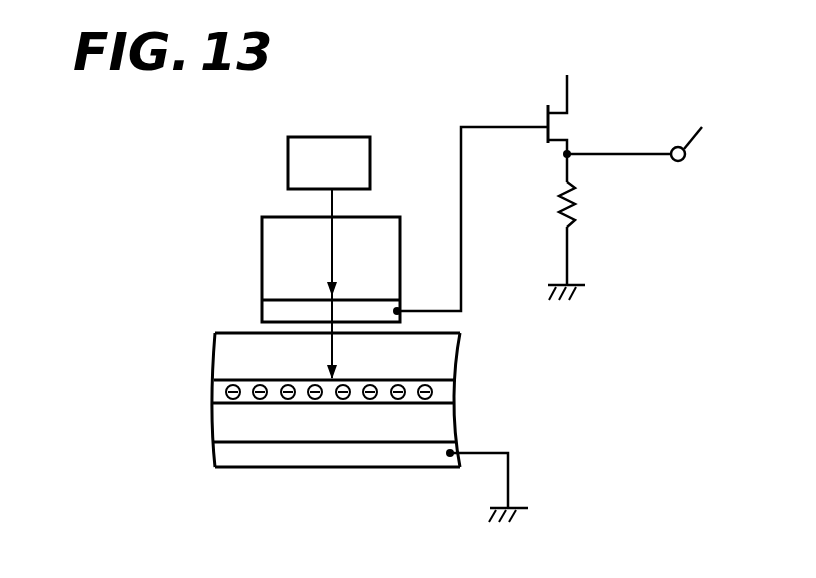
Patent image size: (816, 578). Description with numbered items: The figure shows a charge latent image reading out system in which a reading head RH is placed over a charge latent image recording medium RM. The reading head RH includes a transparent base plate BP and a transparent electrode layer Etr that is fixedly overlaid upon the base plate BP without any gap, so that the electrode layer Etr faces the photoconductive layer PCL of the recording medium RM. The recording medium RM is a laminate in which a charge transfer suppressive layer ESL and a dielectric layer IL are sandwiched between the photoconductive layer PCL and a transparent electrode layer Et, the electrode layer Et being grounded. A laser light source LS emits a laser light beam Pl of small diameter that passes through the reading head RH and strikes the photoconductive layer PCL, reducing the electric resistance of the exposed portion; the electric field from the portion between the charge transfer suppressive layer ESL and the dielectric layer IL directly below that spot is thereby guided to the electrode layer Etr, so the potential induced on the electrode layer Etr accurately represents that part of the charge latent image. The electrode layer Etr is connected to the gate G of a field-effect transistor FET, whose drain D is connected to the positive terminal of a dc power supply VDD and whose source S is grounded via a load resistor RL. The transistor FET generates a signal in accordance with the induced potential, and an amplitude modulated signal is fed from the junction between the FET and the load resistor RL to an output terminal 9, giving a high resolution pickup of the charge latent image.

The laser light source LS is at (329, 163).
The laser light beam Pl is at (340, 203).
The reading head RH is at (277, 203).
The transparent base plate BP is at (270, 243).
The transparent electrode layer Etr is at (275, 303).
The charge latent image recording medium RM is at (330, 419).
The photoconductive layer PCL is at (442, 354).
The charge transfer suppressive layer ESL is at (455, 392).
The dielectric layer IL is at (433, 426).
The transparent electrode layer Et is at (287, 452).
The field-effect transistor FET is at (565, 128).
The dc power supply VDD is at (562, 58).
The drain D is at (551, 90).
The gate G is at (528, 114).
The source S is at (552, 165).
The output terminal 9 is at (641, 135).
The load resistor RL is at (575, 217).